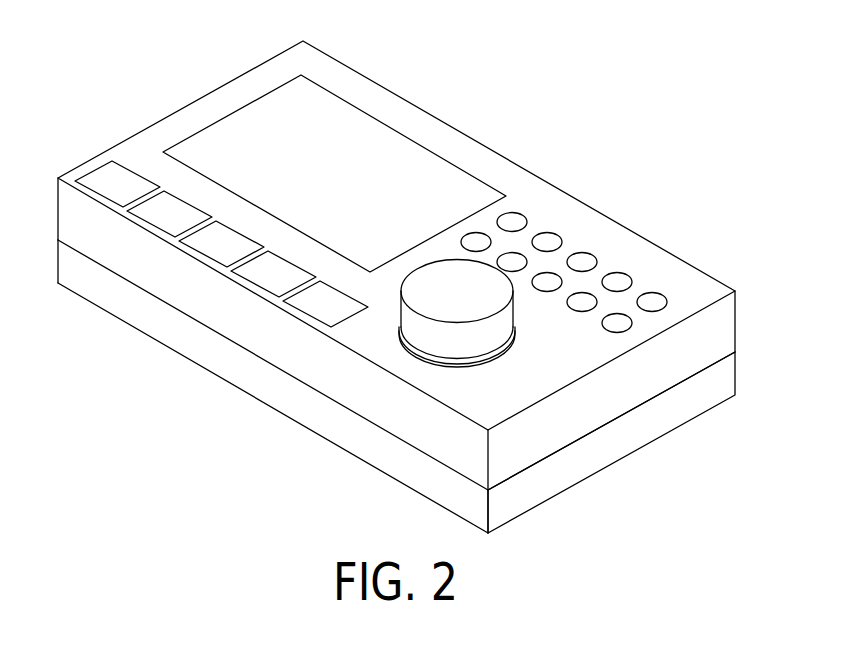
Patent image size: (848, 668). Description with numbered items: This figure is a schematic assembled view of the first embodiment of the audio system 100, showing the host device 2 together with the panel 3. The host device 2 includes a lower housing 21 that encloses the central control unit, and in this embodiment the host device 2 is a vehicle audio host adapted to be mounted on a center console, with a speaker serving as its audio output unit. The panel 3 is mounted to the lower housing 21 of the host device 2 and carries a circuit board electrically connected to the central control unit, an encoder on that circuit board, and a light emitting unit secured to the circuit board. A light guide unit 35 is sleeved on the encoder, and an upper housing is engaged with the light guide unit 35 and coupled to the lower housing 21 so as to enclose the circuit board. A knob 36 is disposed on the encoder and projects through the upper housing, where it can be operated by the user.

The audio system 100 is at (421, 268).
The host device 2 is at (431, 386).
The lower housing 21 is at (737, 370).
The panel 3 is at (396, 280).
The light guide unit 35 is at (498, 352).
The knob 36 is at (455, 280).